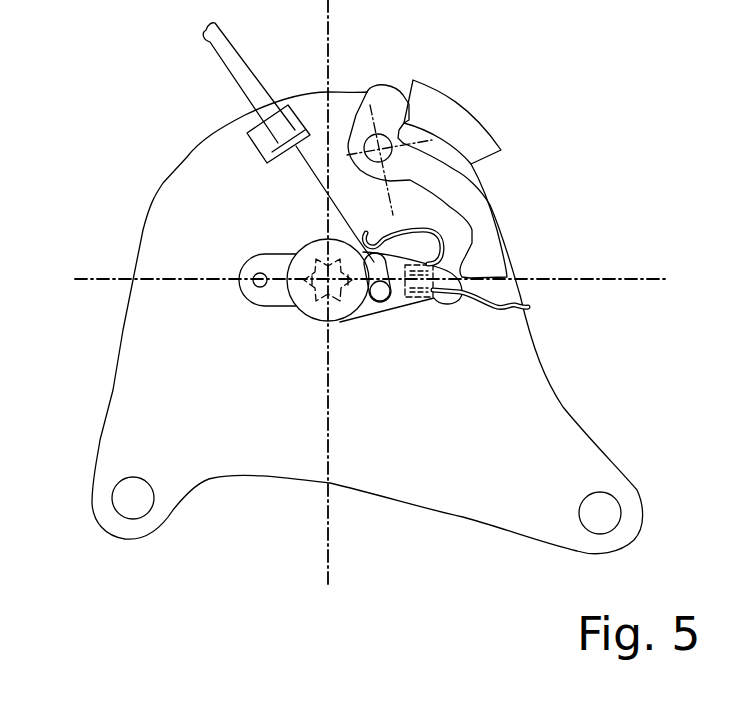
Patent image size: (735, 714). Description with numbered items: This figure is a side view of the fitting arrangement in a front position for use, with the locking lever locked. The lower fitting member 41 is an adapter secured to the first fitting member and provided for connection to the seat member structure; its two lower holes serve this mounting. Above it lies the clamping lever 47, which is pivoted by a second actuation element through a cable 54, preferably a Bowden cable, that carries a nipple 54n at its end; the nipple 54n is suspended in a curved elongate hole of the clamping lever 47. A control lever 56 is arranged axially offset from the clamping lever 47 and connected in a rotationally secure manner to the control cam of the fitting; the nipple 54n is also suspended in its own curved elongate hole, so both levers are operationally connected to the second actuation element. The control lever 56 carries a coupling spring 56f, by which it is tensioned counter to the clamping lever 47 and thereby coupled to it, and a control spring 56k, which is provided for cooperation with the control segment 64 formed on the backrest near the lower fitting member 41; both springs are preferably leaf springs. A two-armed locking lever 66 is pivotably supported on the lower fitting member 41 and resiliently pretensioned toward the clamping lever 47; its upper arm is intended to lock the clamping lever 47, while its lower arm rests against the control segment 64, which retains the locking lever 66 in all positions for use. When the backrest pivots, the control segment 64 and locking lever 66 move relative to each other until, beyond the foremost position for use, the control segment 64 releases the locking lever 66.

The lower fitting member 41 is at (155, 355).
The cable 54 is at (310, 177).
The control segment 64 is at (453, 117).
The locking lever 66 is at (453, 188).
The control lever 56 is at (275, 297).
The clamping lever 47 is at (346, 305).
The nipple 54n is at (382, 297).
The coupling spring 56f is at (443, 248).
The control spring 56k is at (527, 307).